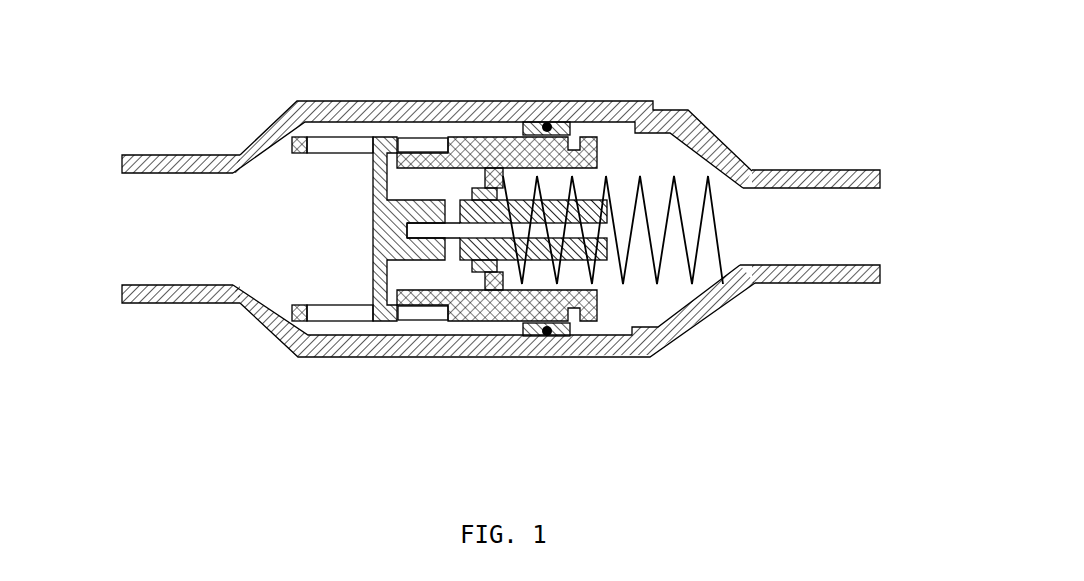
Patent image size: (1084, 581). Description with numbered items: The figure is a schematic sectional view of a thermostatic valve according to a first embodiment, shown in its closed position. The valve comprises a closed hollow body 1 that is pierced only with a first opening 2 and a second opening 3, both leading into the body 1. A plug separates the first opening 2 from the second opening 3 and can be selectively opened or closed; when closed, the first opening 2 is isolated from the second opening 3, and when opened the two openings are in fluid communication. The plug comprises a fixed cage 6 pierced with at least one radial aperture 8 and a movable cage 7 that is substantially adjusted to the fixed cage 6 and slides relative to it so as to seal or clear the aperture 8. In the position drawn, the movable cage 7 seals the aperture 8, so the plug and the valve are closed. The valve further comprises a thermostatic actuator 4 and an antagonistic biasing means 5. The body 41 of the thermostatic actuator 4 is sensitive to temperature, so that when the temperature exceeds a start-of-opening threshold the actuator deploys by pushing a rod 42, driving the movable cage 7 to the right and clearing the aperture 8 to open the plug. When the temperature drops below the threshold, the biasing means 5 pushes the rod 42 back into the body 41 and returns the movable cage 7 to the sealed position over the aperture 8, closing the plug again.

The hollow body 1 is at (275, 122).
The first opening 2 is at (155, 232).
The second opening 3 is at (850, 222).
The thermostatic actuator 4 is at (495, 235).
The body of the thermostatic actuator 41 is at (488, 247).
The rod 42 is at (425, 231).
The biasing means 5 is at (710, 200).
The fixed cage 6 is at (388, 138).
The movable cage 7 is at (455, 158).
The radial aperture 8 is at (425, 139).